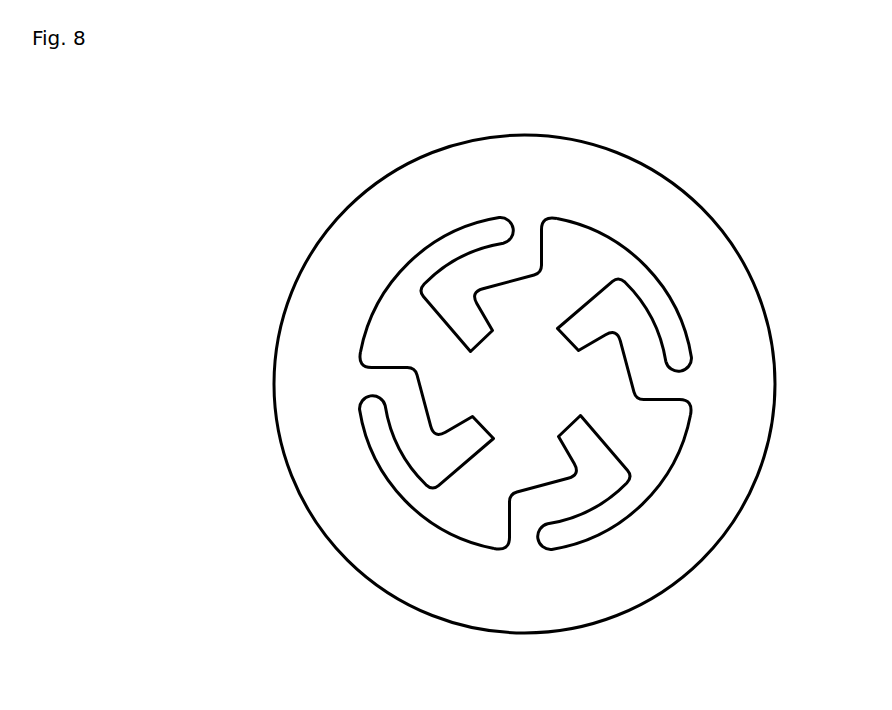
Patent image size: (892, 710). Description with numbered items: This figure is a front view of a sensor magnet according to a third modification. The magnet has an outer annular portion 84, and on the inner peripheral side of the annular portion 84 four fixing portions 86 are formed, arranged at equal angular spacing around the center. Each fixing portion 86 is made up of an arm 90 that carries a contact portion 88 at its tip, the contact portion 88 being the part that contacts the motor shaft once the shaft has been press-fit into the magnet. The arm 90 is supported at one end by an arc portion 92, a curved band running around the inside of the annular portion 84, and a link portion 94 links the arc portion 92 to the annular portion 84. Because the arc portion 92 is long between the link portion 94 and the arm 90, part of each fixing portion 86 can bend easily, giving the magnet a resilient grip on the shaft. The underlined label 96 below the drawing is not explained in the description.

The annular portion 84 is at (680, 243).
The fixing portion 86 is at (393, 358).
The contact portion 88 is at (480, 337).
The arm 90 is at (462, 320).
The arc portion 92 is at (483, 265).
The link portion 94 is at (375, 383).
The spring plate 96 is at (540, 690).